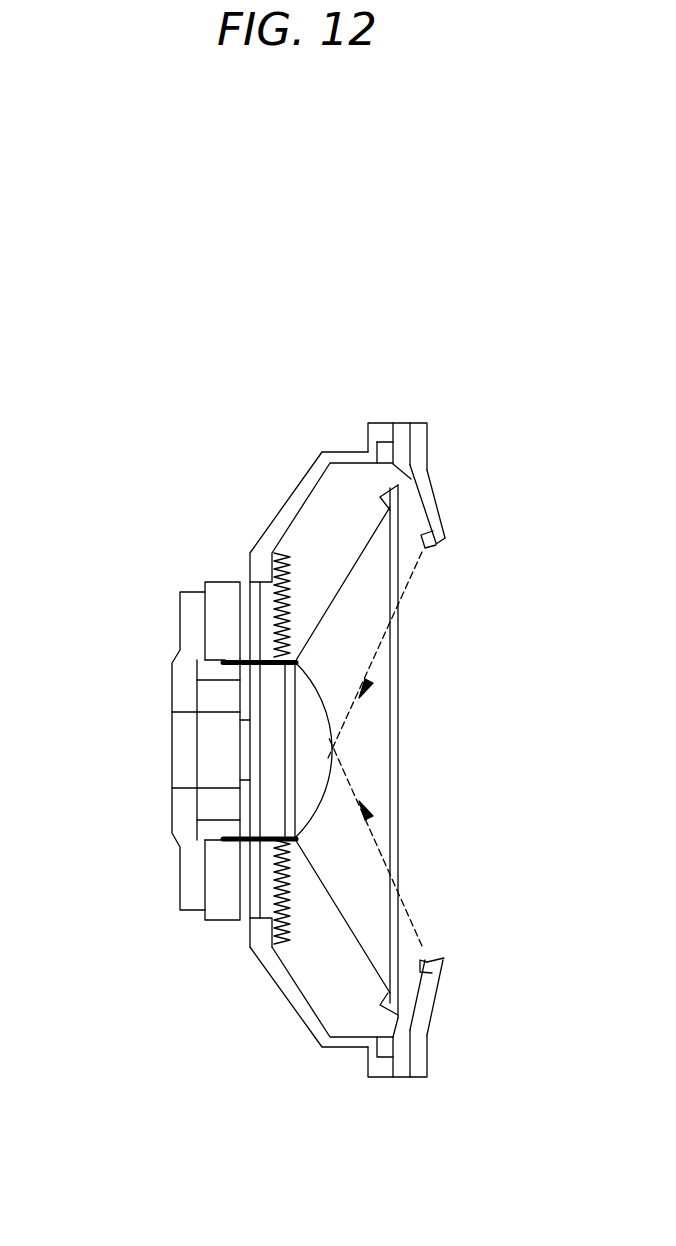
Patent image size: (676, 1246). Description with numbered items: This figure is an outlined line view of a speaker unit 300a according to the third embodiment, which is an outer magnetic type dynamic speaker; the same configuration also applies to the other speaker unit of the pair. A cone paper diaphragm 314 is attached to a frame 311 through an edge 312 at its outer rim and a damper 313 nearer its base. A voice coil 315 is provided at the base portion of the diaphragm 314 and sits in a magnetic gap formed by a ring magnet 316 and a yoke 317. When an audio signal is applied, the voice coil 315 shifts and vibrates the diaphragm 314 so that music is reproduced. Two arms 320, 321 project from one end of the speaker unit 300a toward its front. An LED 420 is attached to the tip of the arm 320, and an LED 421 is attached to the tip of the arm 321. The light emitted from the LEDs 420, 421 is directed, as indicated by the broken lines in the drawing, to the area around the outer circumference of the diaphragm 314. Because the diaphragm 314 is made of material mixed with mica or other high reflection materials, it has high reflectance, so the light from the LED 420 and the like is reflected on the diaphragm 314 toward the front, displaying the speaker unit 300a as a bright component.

The speaker unit 300a is at (384, 236).
The frame 311 is at (298, 488).
The edge 312 is at (400, 477).
The damper 313 is at (288, 953).
The diaphragm 314 is at (314, 1036).
The voice coil 315 is at (227, 662).
The ring magnet 316 is at (220, 922).
The yoke 317 is at (172, 807).
The arm 320 is at (432, 510).
The arm 321 is at (432, 990).
The LED 420 is at (421, 553).
The LED 421 is at (424, 954).